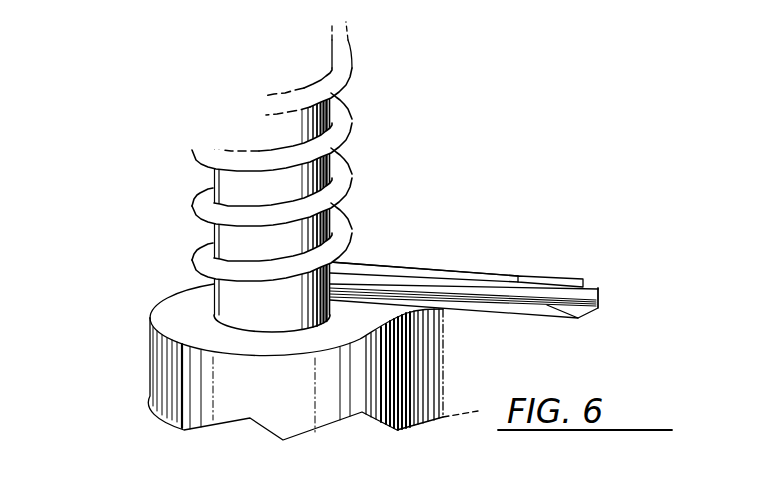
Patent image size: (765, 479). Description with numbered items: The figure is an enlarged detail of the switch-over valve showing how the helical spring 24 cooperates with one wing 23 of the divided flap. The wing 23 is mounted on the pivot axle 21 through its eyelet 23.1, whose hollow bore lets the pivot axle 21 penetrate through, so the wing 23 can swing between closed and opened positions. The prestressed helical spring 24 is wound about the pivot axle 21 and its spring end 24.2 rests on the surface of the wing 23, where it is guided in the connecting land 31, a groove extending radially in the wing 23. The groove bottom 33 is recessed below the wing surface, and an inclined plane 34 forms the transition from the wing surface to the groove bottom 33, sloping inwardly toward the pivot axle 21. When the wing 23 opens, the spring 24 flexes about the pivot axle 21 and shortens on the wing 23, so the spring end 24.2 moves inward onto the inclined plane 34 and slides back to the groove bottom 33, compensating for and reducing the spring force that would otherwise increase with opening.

The pivot axle 21 is at (228, 190).
The wing 23 is at (480, 208).
The eyelet 23.1 is at (176, 368).
The helical spring 24 is at (348, 120).
The spring end 24.2 is at (598, 294).
The connecting land 31 is at (477, 265).
The groove bottom 33 is at (384, 266).
The inclined plane 34 is at (562, 277).